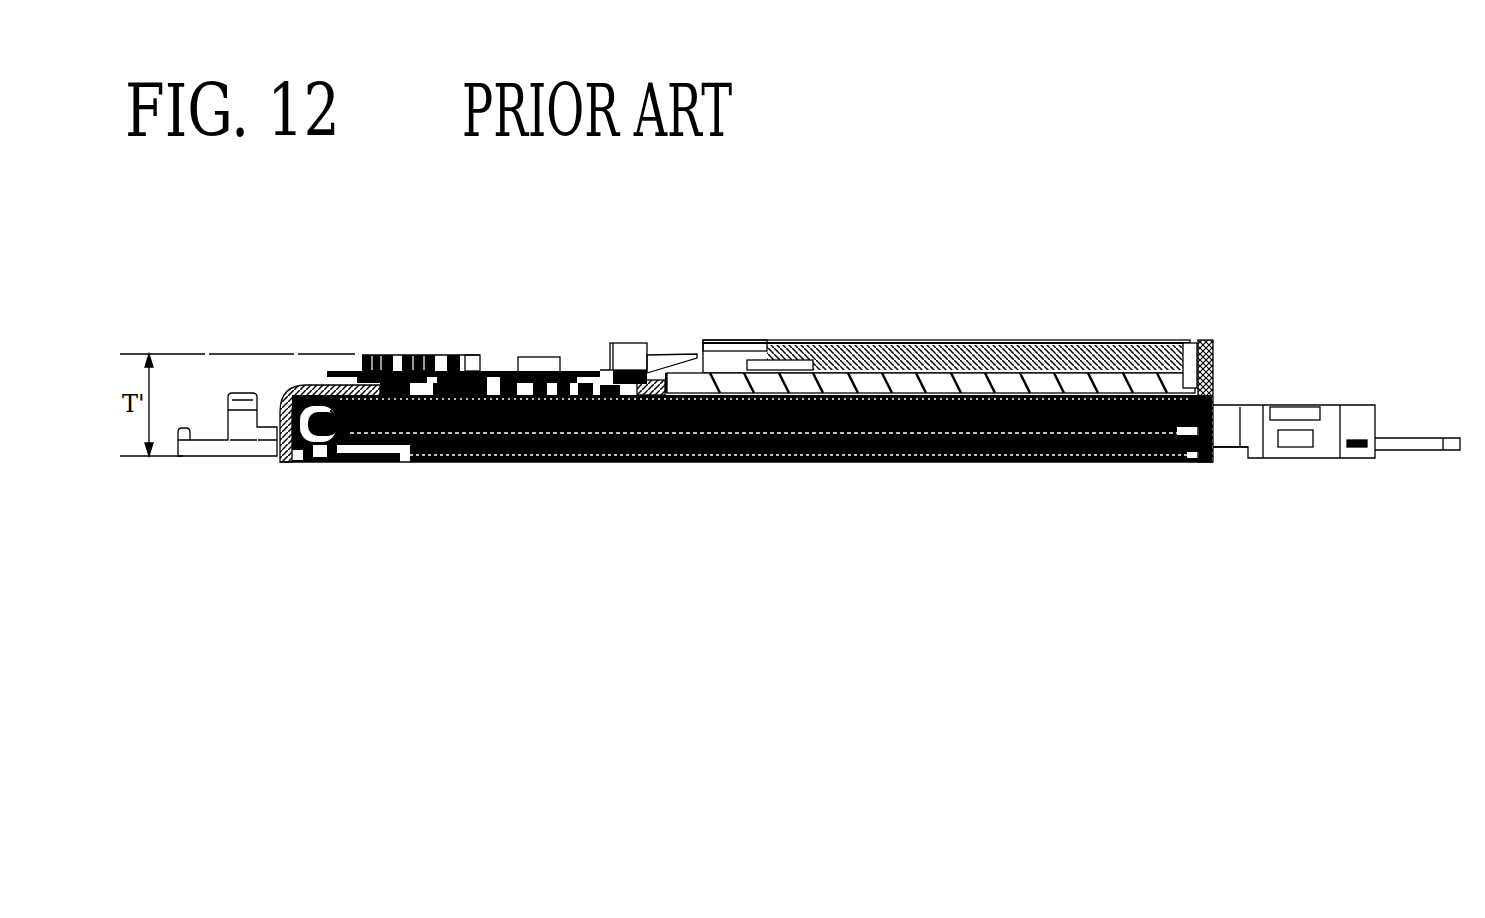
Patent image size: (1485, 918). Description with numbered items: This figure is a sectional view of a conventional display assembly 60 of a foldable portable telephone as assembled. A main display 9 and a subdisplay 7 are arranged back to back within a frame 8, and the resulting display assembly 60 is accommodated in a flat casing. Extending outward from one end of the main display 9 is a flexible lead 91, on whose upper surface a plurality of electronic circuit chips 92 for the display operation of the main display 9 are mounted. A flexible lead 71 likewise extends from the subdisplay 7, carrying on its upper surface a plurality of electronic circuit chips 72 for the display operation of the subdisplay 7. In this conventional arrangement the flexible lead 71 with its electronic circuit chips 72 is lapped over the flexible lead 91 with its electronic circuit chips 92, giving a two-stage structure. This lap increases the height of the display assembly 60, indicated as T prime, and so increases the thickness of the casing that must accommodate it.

The display assembly 60 is at (1107, 232).
The subdisplay 7 is at (1045, 352).
The frame 8 is at (1213, 352).
The main display 9 is at (757, 463).
The flexible lead 71 is at (345, 368).
The electronic circuit chips 72 is at (442, 363).
The flexible lead 91 is at (483, 388).
The electronic circuit chips 92 is at (510, 368).